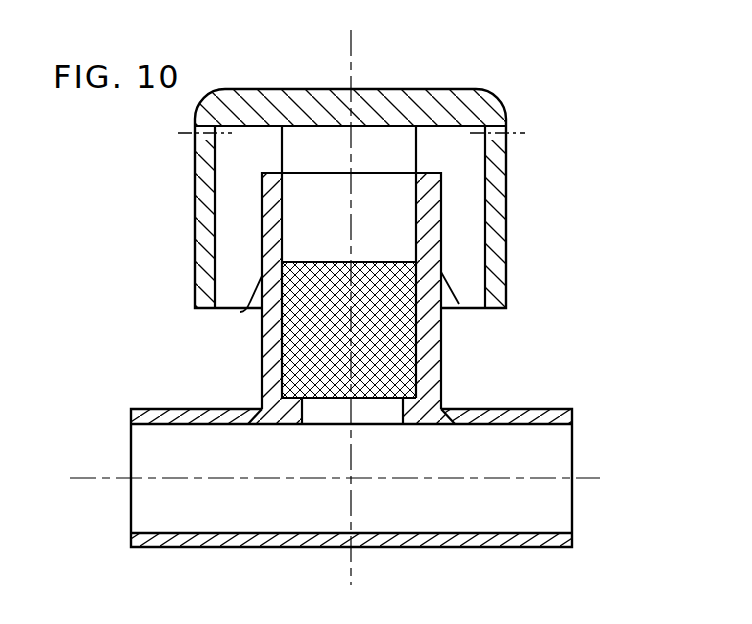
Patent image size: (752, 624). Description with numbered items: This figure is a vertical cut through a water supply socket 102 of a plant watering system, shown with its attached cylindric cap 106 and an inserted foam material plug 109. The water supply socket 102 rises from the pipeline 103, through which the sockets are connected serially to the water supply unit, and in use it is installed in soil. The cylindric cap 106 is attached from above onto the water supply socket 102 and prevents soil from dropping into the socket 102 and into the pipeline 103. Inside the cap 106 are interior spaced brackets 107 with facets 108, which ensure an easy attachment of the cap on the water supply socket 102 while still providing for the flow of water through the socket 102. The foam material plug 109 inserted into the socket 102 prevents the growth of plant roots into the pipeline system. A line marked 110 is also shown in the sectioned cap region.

The water supply socket 102 is at (272, 355).
The pipeline 103 is at (565, 441).
The cylindric cap 106 is at (452, 100).
The interior spaced bracket 107 is at (466, 300).
The facet 108 is at (251, 309).
The foam material plug 109 is at (350, 343).
The parting line / thread region 110 is at (518, 129).